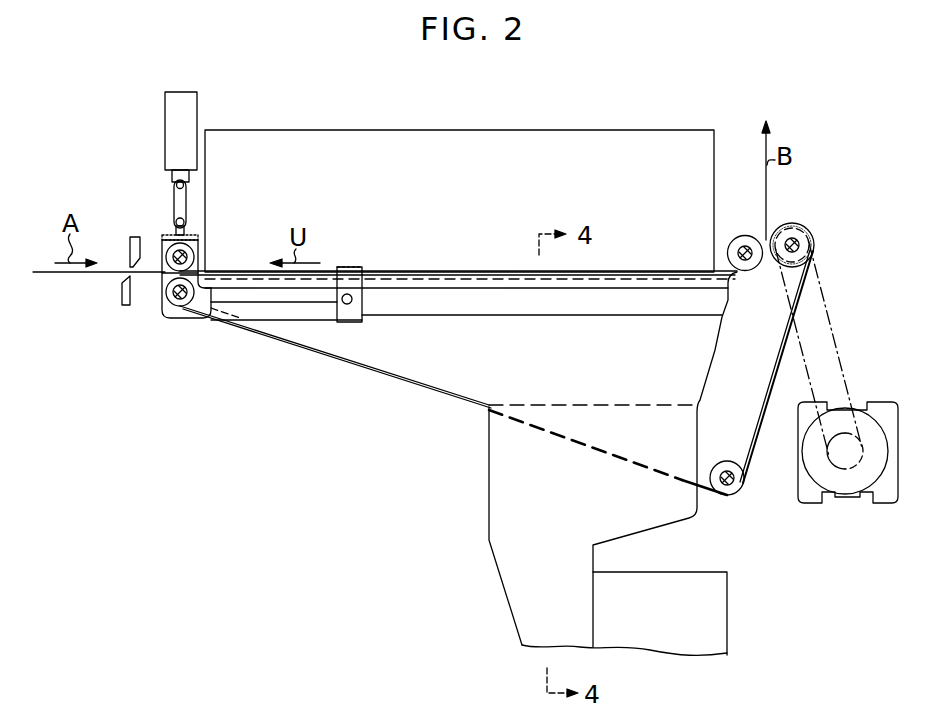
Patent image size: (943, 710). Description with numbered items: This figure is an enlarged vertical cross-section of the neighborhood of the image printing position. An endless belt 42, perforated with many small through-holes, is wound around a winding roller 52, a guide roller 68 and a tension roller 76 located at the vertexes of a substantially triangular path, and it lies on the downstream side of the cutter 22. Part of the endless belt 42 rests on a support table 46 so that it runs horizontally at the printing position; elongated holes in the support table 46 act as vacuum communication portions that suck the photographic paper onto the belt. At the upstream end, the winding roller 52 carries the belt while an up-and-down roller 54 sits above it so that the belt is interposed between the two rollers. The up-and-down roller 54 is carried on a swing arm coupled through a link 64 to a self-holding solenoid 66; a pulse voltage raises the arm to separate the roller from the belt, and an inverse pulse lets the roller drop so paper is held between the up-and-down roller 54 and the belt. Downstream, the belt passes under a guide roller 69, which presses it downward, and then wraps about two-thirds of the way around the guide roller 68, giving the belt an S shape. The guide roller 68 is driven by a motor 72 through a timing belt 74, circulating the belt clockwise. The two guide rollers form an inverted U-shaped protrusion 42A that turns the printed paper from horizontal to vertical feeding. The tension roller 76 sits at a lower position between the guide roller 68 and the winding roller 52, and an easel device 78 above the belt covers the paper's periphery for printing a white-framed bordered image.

The cutter 22 is at (134, 237).
The endless belt 42 is at (330, 365).
The inverted U-shaped protrusion 42A is at (788, 224).
The support table 46 is at (697, 303).
The winding roller 52 is at (187, 297).
The up-and-down roller 54 is at (192, 255).
The link 64 is at (173, 202).
The self-holding solenoid 66 is at (173, 113).
The guide roller 68 is at (802, 224).
The guide roller 69 is at (742, 236).
The motor 72 is at (868, 437).
The timing belt 74 is at (831, 315).
The tension roller 76 is at (727, 461).
The easel device 78 is at (361, 130).